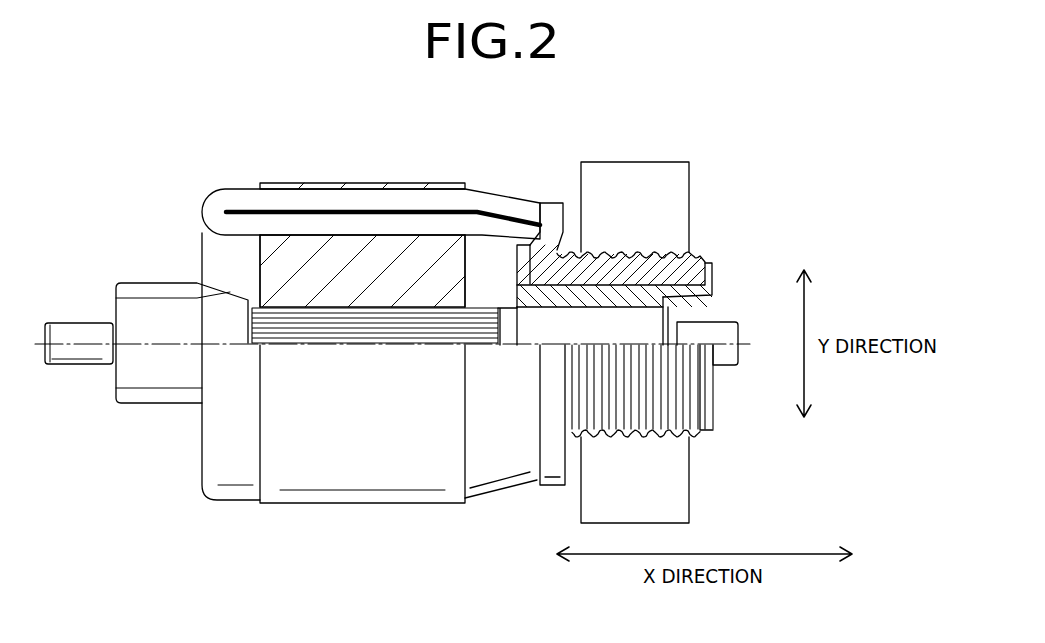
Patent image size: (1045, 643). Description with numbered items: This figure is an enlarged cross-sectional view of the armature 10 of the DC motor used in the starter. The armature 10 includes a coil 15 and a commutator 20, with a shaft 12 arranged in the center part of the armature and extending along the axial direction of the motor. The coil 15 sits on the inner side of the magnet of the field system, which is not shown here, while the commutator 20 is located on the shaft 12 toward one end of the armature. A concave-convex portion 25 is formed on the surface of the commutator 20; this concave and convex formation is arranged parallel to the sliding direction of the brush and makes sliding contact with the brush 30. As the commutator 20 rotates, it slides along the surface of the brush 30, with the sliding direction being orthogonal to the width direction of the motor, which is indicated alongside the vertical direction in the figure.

The armature 10 is at (291, 531).
The shaft 12 is at (645, 322).
The coil 15 is at (327, 197).
The commutator 20 is at (553, 268).
The concave-convex portion 25 is at (647, 245).
The brush 30 is at (634, 177).